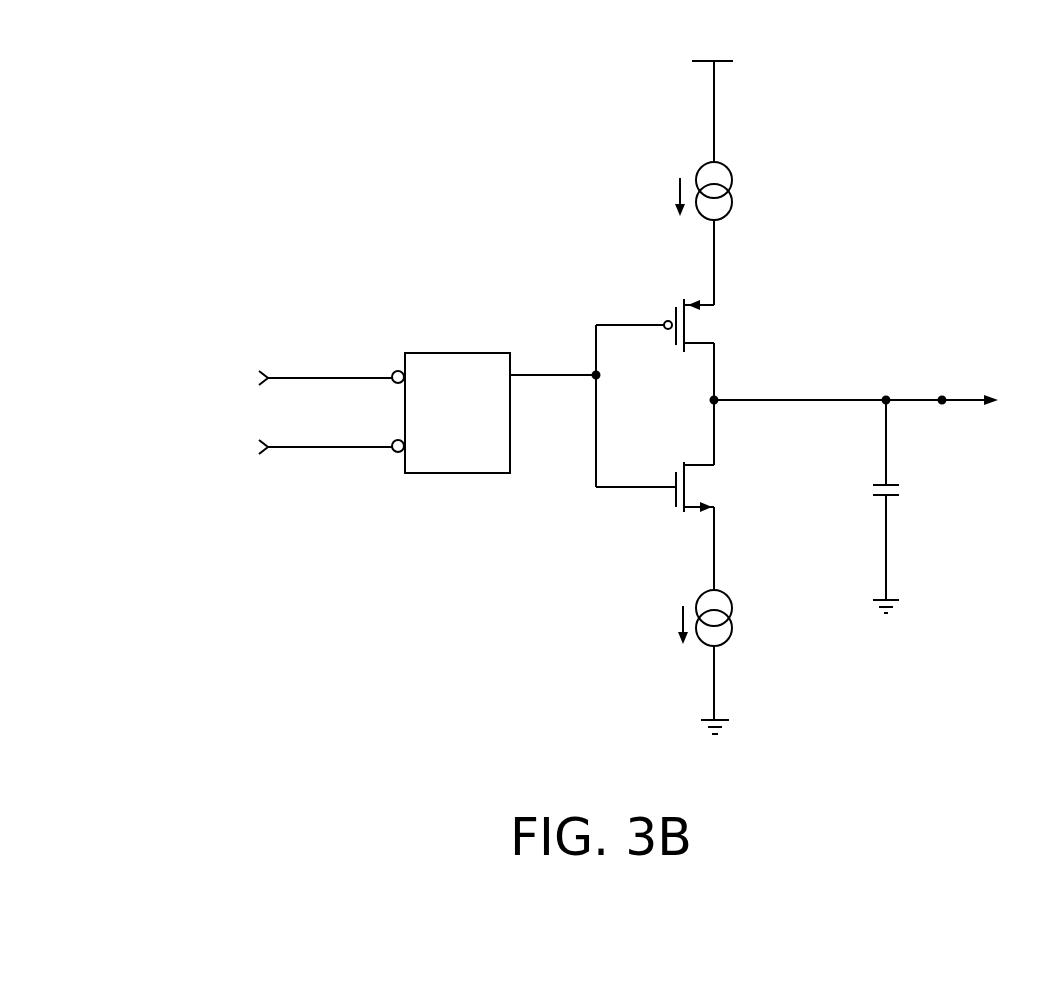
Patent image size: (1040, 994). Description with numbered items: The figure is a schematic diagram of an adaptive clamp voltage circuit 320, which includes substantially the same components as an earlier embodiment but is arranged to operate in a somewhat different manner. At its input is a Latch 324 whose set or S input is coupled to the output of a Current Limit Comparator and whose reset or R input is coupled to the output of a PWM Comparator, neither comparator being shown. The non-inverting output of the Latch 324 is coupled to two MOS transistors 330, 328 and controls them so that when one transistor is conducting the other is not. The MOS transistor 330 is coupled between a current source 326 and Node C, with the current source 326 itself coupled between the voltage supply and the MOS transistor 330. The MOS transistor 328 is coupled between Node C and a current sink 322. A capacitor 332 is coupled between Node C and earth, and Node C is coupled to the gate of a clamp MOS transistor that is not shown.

The adaptive clamp voltage circuit 320 is at (929, 68).
The current sink 322 is at (732, 624).
The Latch 324 is at (470, 353).
The current source 326 is at (733, 175).
The MOS transistor 328 is at (698, 484).
The MOS transistor 330 is at (698, 324).
The capacitor 332 is at (893, 497).